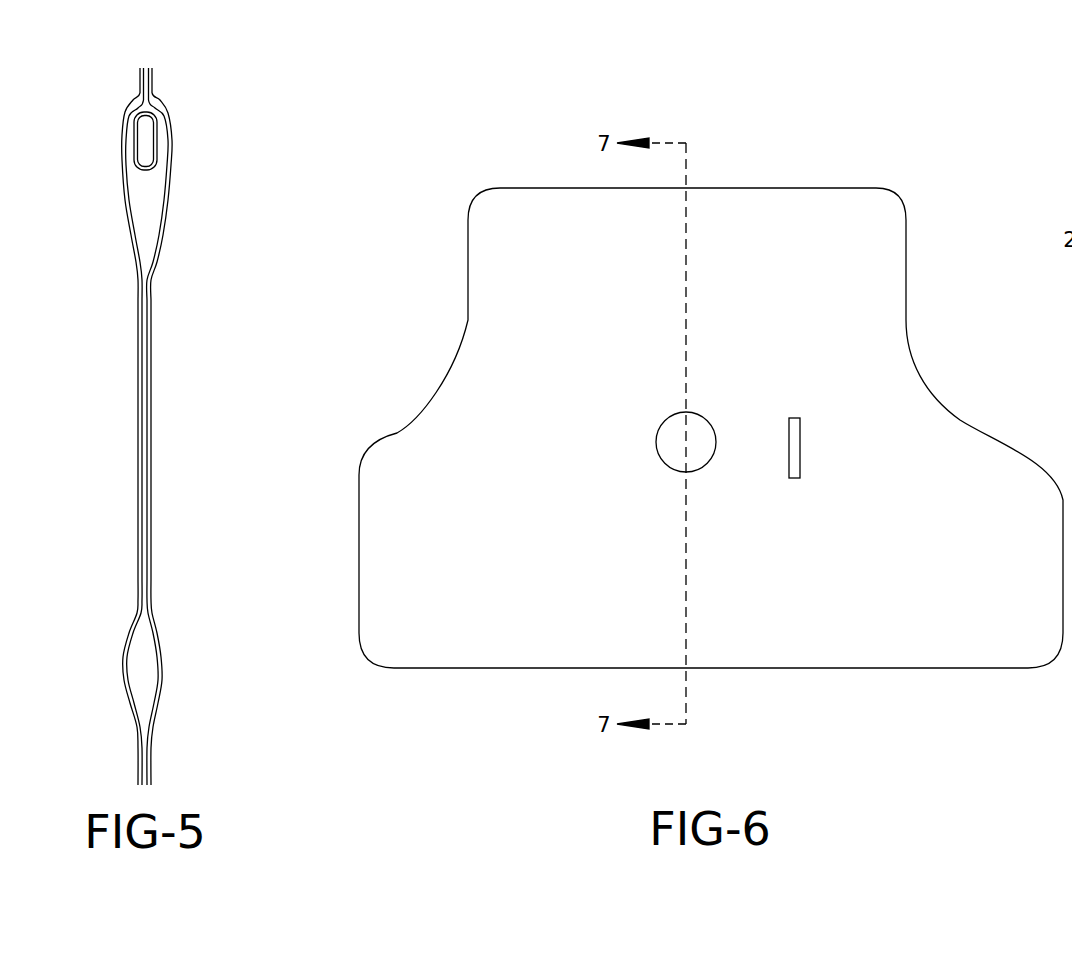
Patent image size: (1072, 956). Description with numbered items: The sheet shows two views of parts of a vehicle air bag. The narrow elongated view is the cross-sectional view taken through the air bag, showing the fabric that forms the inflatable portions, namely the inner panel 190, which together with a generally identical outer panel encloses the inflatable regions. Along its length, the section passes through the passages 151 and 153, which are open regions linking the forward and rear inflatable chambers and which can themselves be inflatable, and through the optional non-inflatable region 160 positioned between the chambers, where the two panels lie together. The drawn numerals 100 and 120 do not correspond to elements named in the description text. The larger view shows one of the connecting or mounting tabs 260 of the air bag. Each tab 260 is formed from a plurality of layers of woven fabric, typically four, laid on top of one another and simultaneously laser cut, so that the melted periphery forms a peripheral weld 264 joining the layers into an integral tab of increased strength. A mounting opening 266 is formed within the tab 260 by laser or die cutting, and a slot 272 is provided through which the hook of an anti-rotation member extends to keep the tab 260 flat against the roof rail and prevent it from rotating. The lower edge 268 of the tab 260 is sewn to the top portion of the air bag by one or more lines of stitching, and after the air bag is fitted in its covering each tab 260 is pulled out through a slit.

In FIG. 5, the restraint strap 100 is at (147, 418).
In FIG. 5, the slot 120 is at (147, 135).
In FIG. 5, the passage 151 is at (147, 195).
In FIG. 5, the passage 153 is at (147, 680).
In FIG. 5, the non-inflatable region 160 is at (152, 345).
In FIG. 5, the inner panel 190 is at (128, 682).
In FIG. 5, the tab 260 is at (141, 80).
In FIG. 6, the tab 260 is at (711, 414).
In FIG. 6, the peripheral weld 264 is at (808, 215).
In FIG. 6, the mounting opening 266 is at (703, 310).
In FIG. 6, the lower edge 268 is at (823, 627).
In FIG. 6, the slot 272 is at (800, 442).